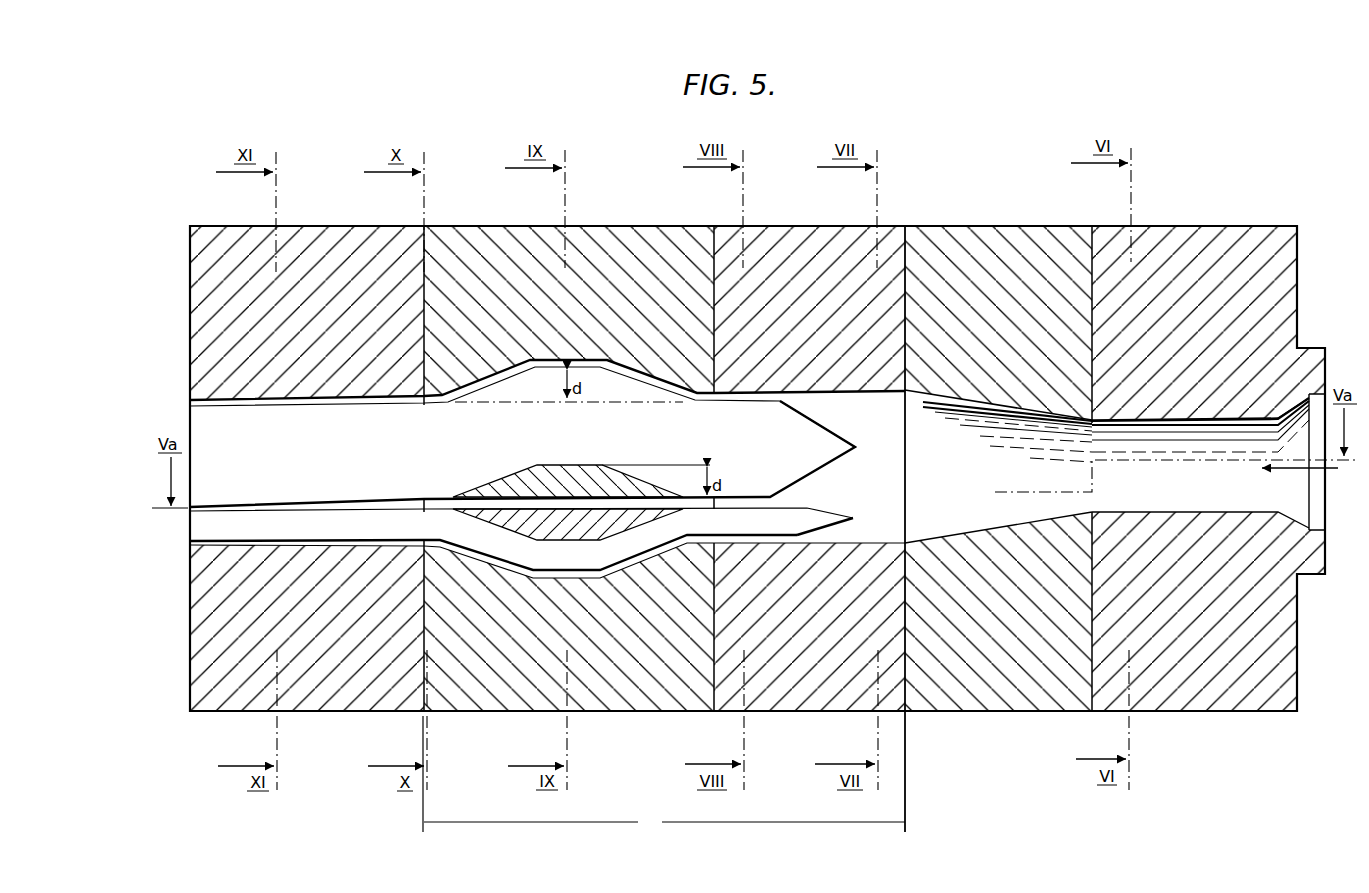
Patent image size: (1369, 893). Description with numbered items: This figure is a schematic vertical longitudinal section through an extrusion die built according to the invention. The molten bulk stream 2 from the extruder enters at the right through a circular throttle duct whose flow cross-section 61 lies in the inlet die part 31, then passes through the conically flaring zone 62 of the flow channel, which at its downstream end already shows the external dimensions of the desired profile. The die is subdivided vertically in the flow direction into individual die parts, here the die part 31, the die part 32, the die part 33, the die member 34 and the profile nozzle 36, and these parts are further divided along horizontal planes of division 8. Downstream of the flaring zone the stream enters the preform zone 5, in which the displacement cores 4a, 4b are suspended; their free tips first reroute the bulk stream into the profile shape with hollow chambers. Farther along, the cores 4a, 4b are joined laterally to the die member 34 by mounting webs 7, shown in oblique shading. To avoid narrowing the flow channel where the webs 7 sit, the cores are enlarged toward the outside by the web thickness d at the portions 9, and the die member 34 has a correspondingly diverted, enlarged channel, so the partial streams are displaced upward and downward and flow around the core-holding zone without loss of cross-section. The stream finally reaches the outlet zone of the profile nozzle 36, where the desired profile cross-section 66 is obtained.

The bulk stream 2 is at (1296, 468).
The displacement core 4a is at (782, 452).
The displacement core 4b is at (782, 529).
The preform zone 5 is at (664, 775).
The webs 7 is at (564, 491).
The planes of division 8 is at (905, 252).
The portions 9 is at (598, 387).
The die part 31 is at (1229, 237).
The die part 32 is at (1042, 240).
The die part 33 is at (824, 243).
The die member 34 is at (652, 245).
The profile nozzle 36 is at (364, 245).
The flow cross-section 61 is at (1192, 493).
The conically flaring zone 62 is at (985, 502).
The profile cross-section 66 is at (190, 542).